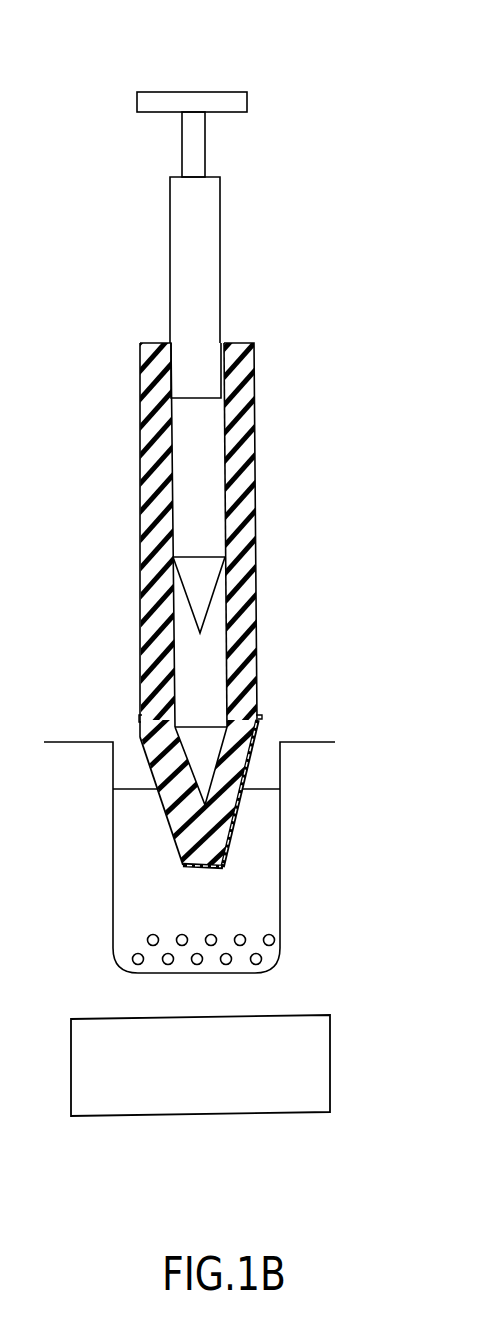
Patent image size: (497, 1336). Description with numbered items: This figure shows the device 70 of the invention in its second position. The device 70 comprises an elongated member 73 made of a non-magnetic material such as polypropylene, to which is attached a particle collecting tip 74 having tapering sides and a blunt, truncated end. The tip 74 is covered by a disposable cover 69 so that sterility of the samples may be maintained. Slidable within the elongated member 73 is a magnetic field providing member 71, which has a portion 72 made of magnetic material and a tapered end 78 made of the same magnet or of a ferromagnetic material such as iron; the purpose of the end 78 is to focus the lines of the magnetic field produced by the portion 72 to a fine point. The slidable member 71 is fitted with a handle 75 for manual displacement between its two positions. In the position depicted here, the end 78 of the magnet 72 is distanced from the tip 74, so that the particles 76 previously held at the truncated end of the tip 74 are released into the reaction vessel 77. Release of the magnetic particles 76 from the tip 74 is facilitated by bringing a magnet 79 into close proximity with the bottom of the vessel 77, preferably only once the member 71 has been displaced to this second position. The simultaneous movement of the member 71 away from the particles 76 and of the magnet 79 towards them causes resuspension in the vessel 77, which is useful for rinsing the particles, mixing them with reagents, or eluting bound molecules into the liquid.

The device 70 is at (84, 431).
The handle 75 is at (199, 91).
The magnetic field providing member 71 is at (203, 245).
The portion made of magnetic material 72 is at (207, 487).
The tapered end 78 is at (199, 586).
The disposable cover 69 is at (139, 730).
The elongated member 73 is at (256, 764).
The particle collecting tip 74 is at (203, 867).
The reaction vessel 77 is at (255, 853).
The particles 76 is at (243, 935).
The magnet 79 is at (298, 1016).